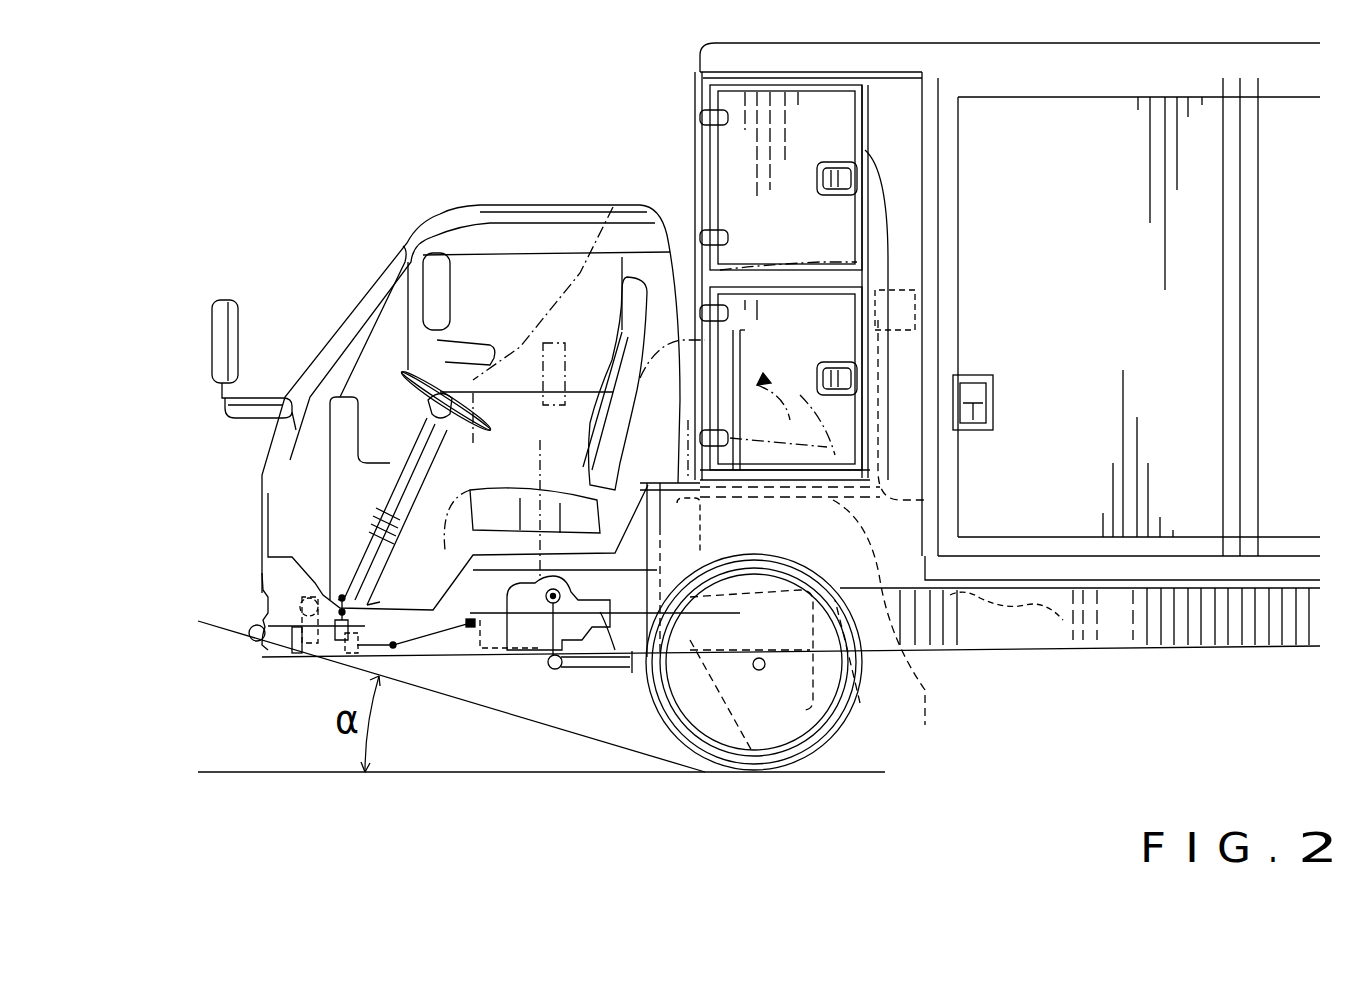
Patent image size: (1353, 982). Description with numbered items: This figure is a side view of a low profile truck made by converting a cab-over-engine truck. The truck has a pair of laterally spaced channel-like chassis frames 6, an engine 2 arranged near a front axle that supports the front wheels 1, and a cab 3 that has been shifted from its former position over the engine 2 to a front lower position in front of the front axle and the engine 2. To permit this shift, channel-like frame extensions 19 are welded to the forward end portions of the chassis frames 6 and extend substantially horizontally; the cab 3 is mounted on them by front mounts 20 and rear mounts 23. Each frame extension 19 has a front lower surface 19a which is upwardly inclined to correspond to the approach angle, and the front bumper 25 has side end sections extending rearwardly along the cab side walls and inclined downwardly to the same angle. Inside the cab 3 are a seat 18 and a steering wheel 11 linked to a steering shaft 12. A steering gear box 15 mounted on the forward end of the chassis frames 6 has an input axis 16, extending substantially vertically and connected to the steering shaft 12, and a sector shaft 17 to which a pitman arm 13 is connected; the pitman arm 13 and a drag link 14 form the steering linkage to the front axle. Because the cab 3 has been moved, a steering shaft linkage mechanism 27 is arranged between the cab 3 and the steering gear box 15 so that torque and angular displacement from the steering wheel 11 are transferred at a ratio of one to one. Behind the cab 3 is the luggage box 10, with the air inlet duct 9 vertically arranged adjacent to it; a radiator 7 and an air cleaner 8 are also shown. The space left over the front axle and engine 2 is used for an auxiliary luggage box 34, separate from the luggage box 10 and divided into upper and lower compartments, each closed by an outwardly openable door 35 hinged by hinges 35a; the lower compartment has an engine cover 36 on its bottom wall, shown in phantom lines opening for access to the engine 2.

The front wheels 1 is at (818, 720).
The engine 2 is at (860, 703).
The cab 3 is at (437, 222).
The chassis frames 6 is at (1095, 660).
The radiator 7 is at (762, 745).
The air cleaner 8 is at (880, 560).
The air inlet duct 9 is at (918, 333).
The luggage box 10 is at (1097, 75).
The steering wheel 11 is at (407, 368).
The steering shaft 12 is at (400, 480).
The pitman arm 13 is at (549, 668).
The drag link 14 is at (615, 650).
The steering gear box 15 is at (600, 640).
The input axis 16 is at (525, 598).
The sector shaft 17 is at (548, 620).
The seat 18 is at (613, 377).
The frame extensions 19 is at (307, 645).
The front lower surface 19a is at (300, 645).
The front mounts 20 is at (305, 597).
The rear mounts 23 is at (700, 700).
The front bumper 25 is at (252, 641).
The steering shaft linkage mechanism 27 is at (415, 652).
The auxiliary luggage box 34 is at (715, 68).
The door 35 is at (848, 108).
The hinges 35a is at (700, 118).
The engine cover 36 is at (745, 330).